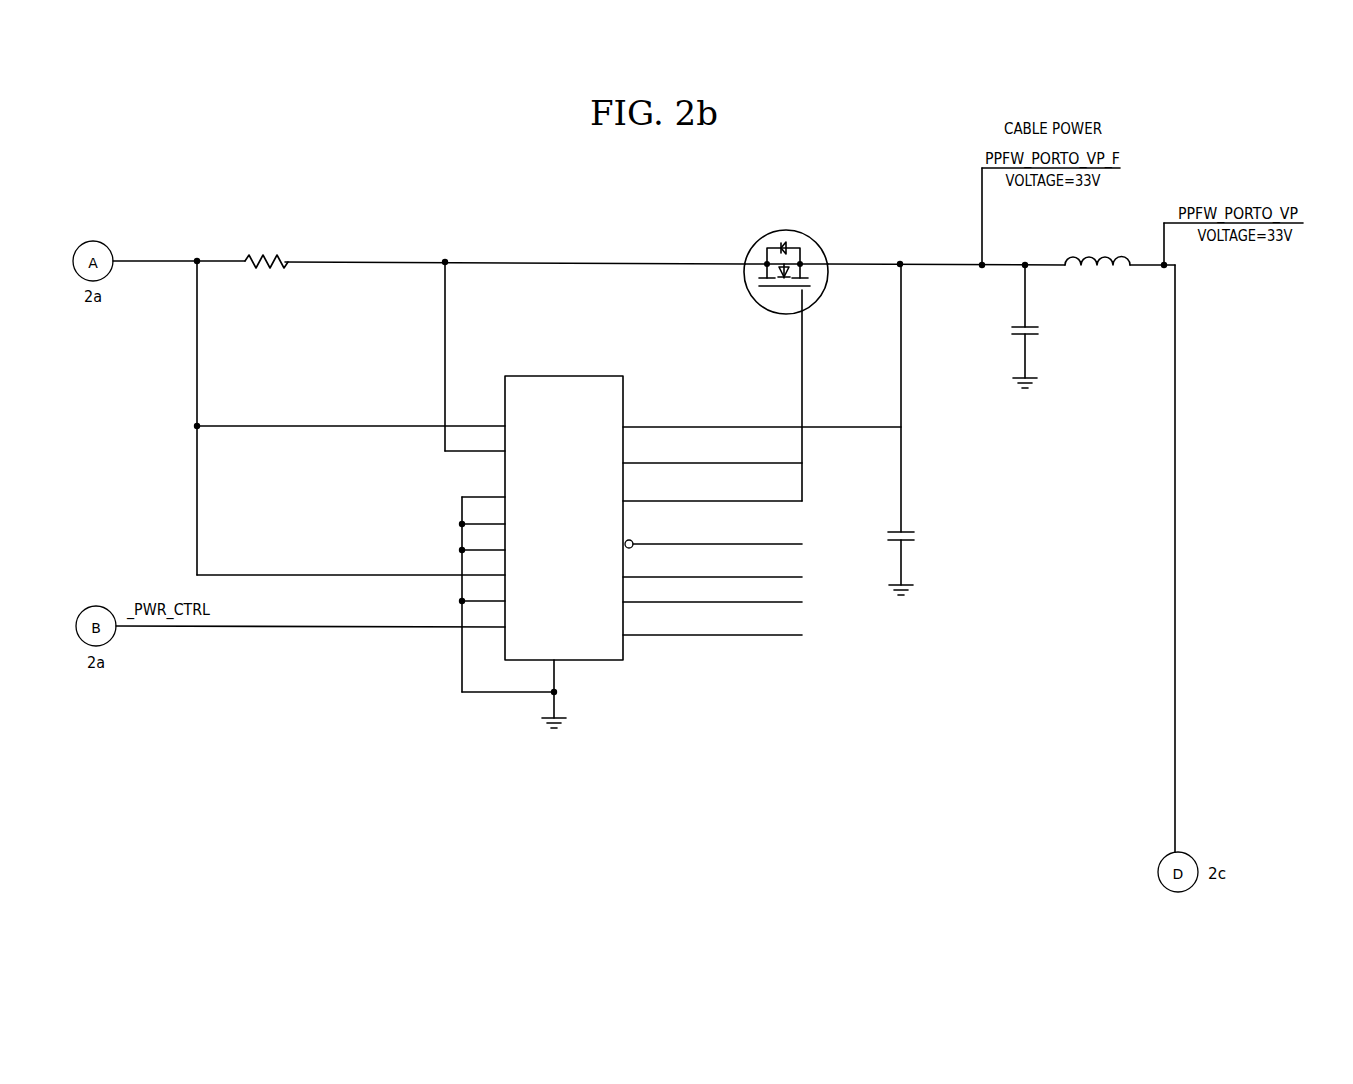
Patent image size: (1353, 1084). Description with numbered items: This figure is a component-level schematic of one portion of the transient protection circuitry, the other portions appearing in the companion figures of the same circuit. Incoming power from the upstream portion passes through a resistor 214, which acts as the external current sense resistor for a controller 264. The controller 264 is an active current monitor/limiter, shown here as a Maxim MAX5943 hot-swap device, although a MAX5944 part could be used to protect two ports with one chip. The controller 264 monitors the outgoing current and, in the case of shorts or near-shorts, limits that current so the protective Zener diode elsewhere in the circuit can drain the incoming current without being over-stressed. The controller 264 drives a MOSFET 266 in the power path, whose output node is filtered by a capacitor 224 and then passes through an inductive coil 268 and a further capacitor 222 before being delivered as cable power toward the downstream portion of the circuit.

The resistor 214 is at (293, 250).
The controller 264 is at (623, 394).
The MOSFET 266 is at (815, 243).
The inductive coil 268 is at (1127, 218).
The capacitor 222 is at (1007, 331).
The capacitor 224 is at (928, 533).